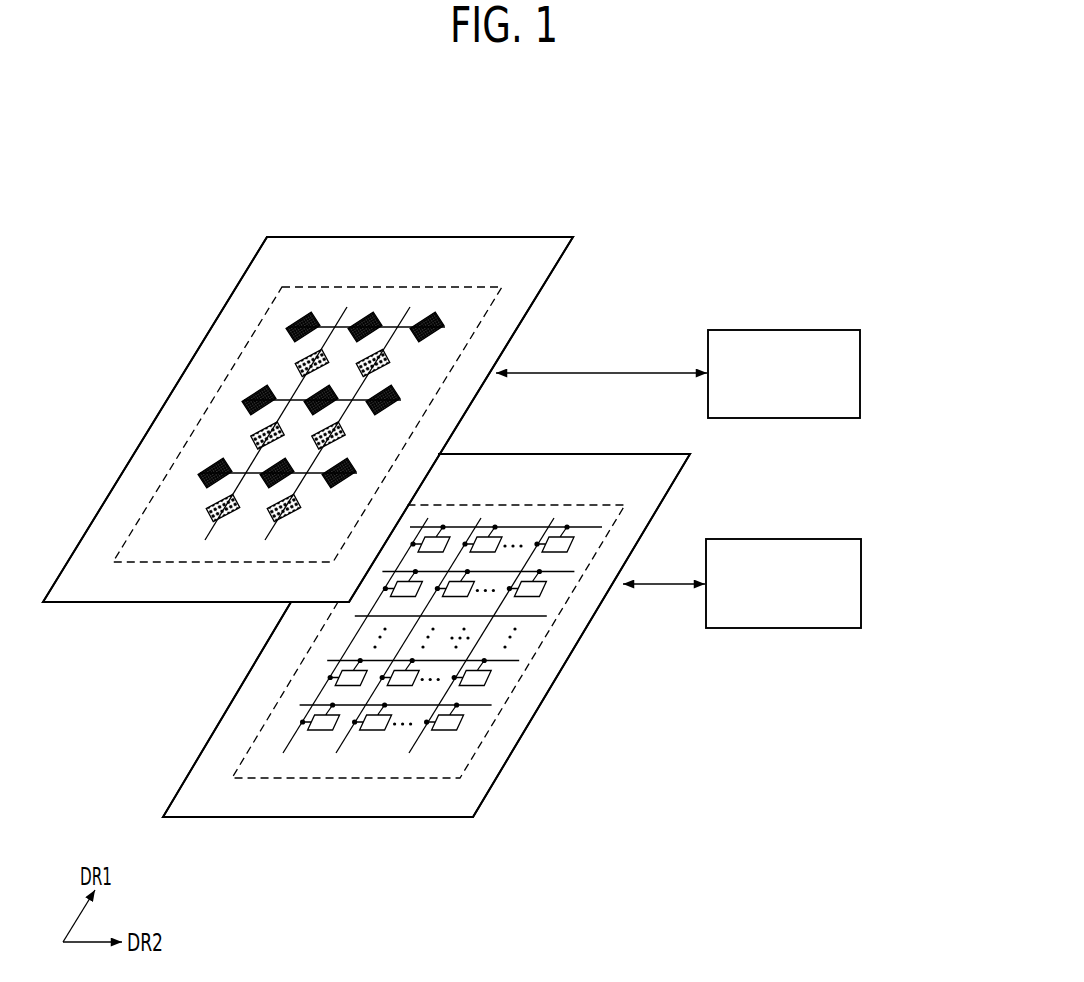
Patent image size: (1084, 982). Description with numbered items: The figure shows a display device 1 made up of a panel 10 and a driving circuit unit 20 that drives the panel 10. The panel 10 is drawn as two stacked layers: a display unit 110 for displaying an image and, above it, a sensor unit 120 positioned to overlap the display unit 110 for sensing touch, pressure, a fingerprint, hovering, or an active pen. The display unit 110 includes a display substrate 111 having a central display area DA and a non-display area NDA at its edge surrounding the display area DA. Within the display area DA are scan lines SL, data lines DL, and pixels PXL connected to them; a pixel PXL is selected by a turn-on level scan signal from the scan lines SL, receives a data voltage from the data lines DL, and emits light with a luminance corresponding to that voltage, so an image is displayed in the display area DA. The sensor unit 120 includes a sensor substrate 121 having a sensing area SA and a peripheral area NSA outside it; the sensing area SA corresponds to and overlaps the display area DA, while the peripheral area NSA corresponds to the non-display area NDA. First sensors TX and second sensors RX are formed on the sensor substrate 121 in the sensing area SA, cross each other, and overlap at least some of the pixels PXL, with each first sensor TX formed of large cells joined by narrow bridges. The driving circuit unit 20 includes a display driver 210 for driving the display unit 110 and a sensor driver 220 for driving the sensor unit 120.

The display device 1 is at (704, 159).
The panel 10 is at (116, 627).
The driving circuit unit 20 is at (929, 388).
The display unit 110 is at (227, 707).
The display substrate 111 is at (494, 780).
The sensor unit 120 is at (207, 606).
The sensor substrate 121 is at (171, 392).
The display driver 210 is at (861, 573).
The sensor driver 220 is at (861, 374).
The second sensors RX is at (298, 325).
The first sensors TX is at (304, 361).
The sensing area SA is at (493, 279).
The peripheral area NSA is at (479, 343).
The display area DA is at (598, 496).
The non-display area NDA is at (619, 527).
The pixels PXL is at (548, 587).
The scan lines SL is at (503, 660).
The data lines DL is at (446, 695).